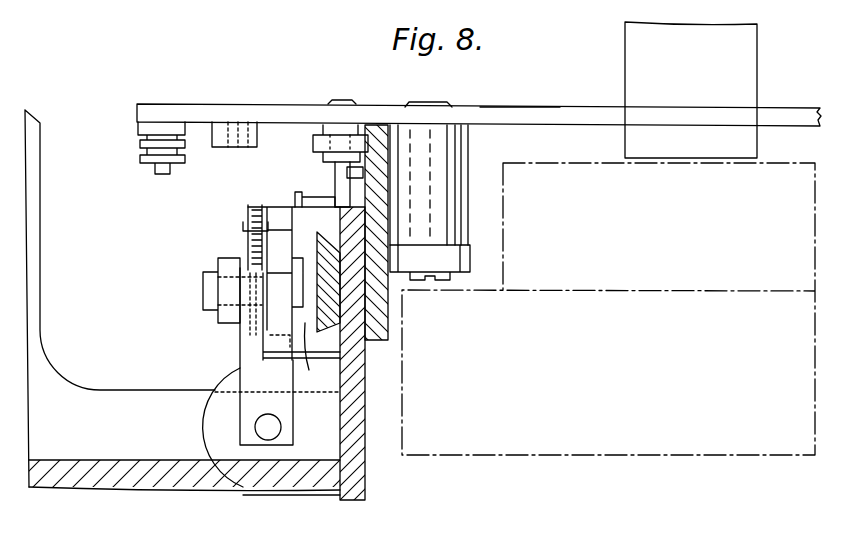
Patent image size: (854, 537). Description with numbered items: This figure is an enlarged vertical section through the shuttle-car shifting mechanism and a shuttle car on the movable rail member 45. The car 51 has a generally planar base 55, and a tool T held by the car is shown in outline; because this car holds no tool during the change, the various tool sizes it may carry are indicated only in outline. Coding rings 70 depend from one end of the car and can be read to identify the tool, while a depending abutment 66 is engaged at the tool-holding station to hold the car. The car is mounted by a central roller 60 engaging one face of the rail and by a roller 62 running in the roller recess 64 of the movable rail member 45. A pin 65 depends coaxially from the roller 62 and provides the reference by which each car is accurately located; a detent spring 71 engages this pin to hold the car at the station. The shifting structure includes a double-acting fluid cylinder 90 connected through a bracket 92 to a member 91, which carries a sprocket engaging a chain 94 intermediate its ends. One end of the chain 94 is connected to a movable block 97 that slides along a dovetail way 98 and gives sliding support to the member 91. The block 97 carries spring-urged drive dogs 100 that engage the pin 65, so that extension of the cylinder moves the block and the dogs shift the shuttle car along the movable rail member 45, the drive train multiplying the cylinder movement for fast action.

The base 55 is at (296, 104).
The car 51 is at (516, 106).
The tool T is at (632, 55).
The coding rings 70 is at (136, 146).
The depending abutment 66 is at (220, 148).
The roller 62 is at (313, 143).
The roller recess 64 is at (368, 143).
The pin 65 is at (340, 176).
The detent spring 71 is at (359, 172).
The drive dogs 100 is at (315, 197).
The central roller 60 is at (470, 258).
The movable rail member 45 is at (366, 318).
The dovetail way 98 is at (333, 262).
The movable block 97 is at (317, 355).
The chain 94 is at (255, 243).
The member 91 is at (264, 280).
The bracket 92 is at (245, 345).
The double-acting fluid cylinder 90 is at (225, 391).